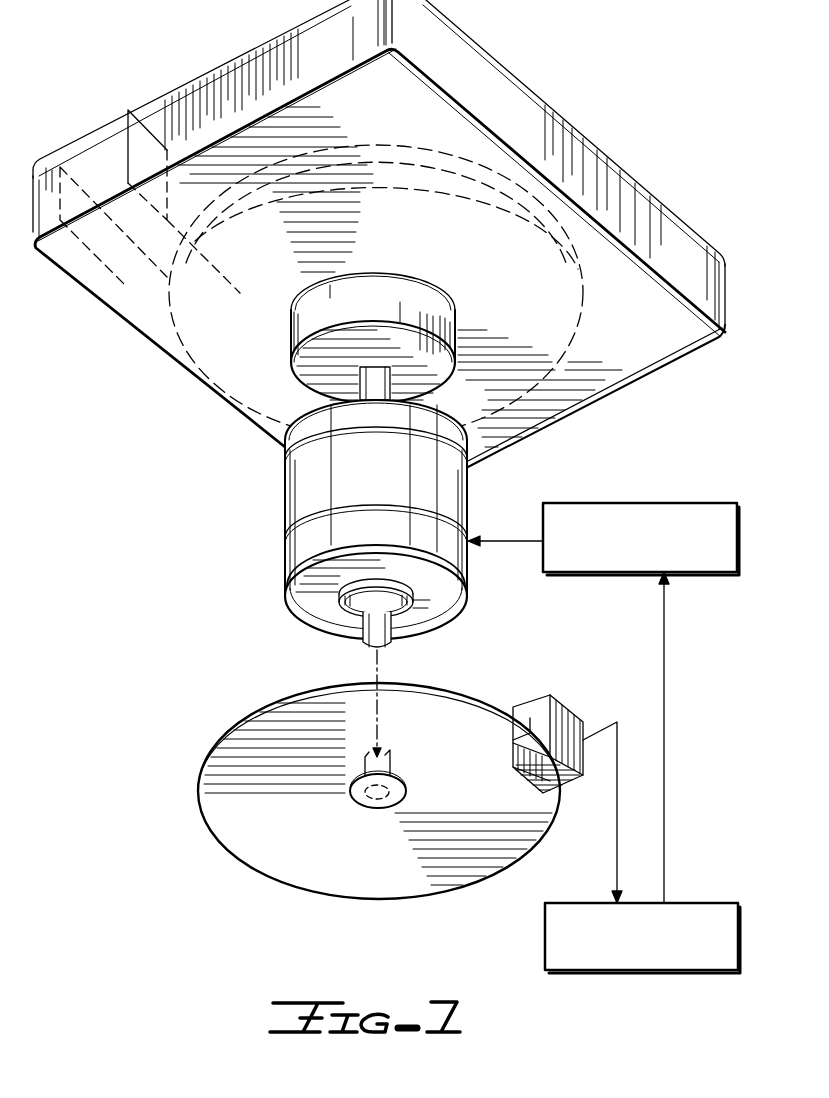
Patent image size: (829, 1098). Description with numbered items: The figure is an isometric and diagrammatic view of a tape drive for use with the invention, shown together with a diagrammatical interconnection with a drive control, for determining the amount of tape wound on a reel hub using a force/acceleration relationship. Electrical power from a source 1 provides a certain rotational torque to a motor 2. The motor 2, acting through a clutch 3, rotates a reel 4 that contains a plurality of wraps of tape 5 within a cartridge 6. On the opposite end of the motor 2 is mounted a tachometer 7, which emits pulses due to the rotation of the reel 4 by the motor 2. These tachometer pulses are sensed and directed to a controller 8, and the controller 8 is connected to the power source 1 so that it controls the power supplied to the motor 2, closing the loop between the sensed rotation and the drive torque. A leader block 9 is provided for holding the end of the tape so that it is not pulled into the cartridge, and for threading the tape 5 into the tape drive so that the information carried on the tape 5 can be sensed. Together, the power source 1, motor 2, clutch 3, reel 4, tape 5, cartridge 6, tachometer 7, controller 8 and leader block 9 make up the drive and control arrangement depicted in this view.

The power source 1 is at (695, 503).
The motor 2 is at (470, 520).
The clutch 3 is at (380, 283).
The reel 4 is at (582, 327).
The tape 5 is at (120, 284).
The cartridge 6 is at (370, 233).
The tachometer 7 is at (463, 692).
The controller 8 is at (702, 903).
The leader block 9 is at (55, 254).